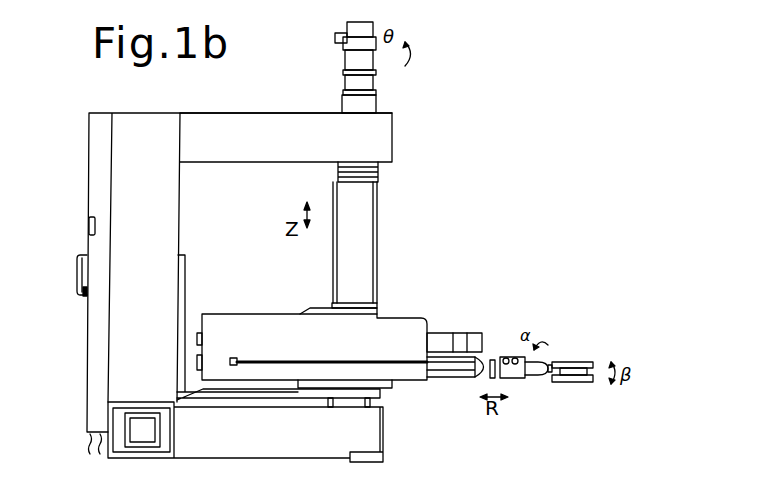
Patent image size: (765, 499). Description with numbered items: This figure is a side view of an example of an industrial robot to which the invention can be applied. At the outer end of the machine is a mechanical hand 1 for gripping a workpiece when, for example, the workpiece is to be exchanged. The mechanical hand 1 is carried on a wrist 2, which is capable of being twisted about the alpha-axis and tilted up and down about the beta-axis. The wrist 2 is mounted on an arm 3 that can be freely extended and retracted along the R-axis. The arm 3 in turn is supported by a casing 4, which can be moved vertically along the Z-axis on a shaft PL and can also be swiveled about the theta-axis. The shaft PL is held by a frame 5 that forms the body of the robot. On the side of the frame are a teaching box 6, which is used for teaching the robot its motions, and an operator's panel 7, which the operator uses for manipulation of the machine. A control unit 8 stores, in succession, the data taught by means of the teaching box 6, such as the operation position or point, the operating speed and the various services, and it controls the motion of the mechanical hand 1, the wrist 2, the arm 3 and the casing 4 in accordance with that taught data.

The mechanical hand 1 is at (591, 363).
The wrist 2 is at (541, 363).
The arm 3 is at (506, 357).
The casing 4 is at (413, 326).
The frame 5 is at (389, 147).
The teaching box 6 is at (78, 272).
The operator's panel 7 is at (84, 223).
The control unit 8 is at (90, 362).
The shaft PL is at (368, 212).